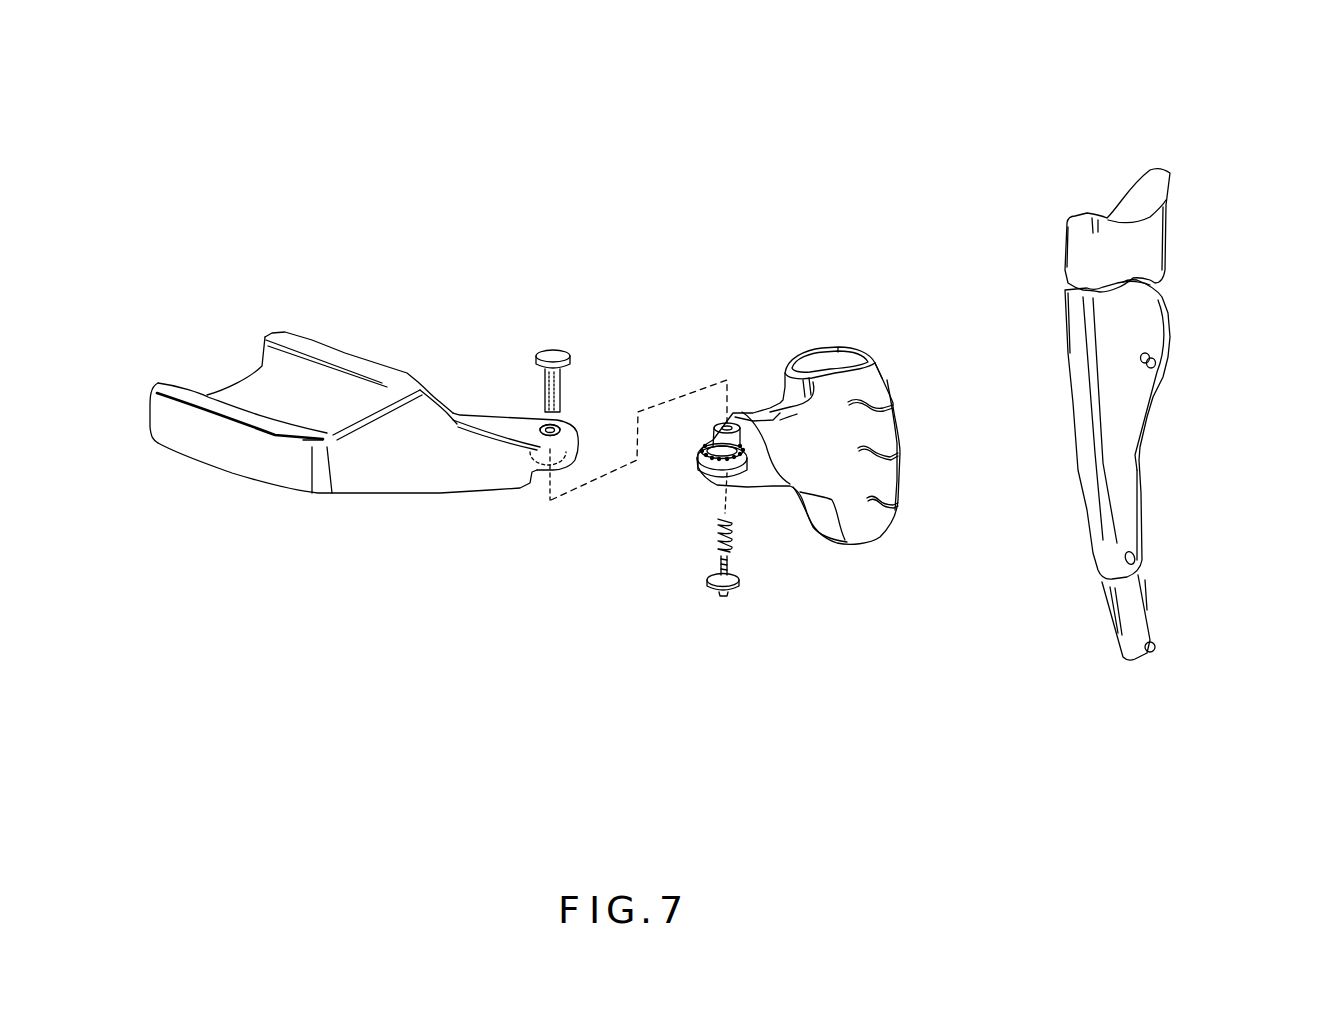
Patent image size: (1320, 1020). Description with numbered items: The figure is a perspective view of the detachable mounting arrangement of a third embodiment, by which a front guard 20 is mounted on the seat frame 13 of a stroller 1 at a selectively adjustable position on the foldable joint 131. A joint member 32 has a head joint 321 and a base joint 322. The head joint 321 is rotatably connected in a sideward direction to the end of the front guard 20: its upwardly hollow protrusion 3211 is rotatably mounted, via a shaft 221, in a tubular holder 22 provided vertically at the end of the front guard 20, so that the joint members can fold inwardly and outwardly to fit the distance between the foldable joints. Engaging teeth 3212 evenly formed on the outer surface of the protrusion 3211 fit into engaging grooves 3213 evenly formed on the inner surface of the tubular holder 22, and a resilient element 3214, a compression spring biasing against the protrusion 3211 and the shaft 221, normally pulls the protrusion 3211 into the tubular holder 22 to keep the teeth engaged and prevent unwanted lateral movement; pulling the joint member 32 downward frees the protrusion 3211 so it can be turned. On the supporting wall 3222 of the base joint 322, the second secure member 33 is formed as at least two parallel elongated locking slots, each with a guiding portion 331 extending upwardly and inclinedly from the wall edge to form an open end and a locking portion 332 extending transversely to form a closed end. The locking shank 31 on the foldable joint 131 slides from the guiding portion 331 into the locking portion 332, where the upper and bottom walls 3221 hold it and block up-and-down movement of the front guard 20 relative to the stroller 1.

The stroller 1 is at (1280, 223).
The seat frame 13 is at (1245, 262).
The foldable joint 131 is at (1145, 331).
The locking shank 31 is at (1152, 365).
The front guard 20 is at (253, 458).
The tubular holder 22 is at (539, 422).
The shaft 221 is at (548, 354).
The joint member 32 is at (378, 737).
The head joint 321 is at (537, 580).
The protrusion 3211 is at (722, 462).
The engaging teeth 3212 is at (702, 450).
The engaging grooves 3213 is at (568, 443).
The resilient element 3214 is at (720, 538).
The base joint 322 is at (915, 238).
The upper and bottom walls 3221 is at (838, 352).
The supporting wall 3222 is at (875, 372).
The second secure member 33 is at (928, 608).
The guiding portion 331 is at (900, 460).
The locking portion 332 is at (867, 456).